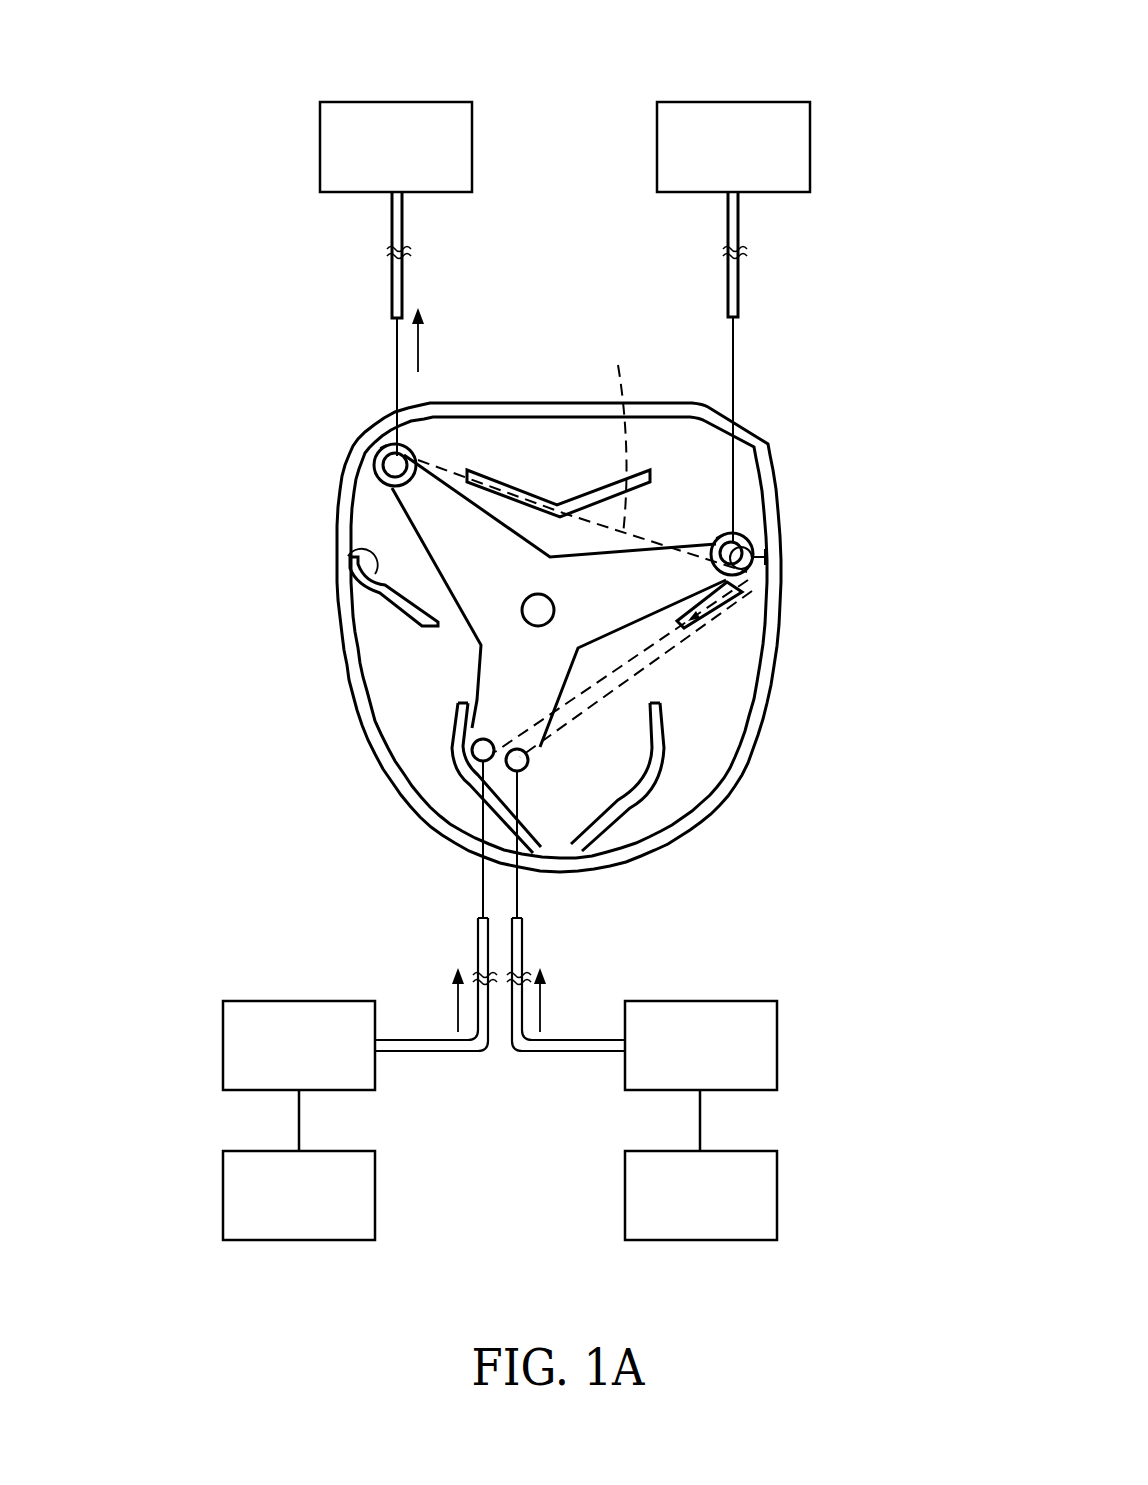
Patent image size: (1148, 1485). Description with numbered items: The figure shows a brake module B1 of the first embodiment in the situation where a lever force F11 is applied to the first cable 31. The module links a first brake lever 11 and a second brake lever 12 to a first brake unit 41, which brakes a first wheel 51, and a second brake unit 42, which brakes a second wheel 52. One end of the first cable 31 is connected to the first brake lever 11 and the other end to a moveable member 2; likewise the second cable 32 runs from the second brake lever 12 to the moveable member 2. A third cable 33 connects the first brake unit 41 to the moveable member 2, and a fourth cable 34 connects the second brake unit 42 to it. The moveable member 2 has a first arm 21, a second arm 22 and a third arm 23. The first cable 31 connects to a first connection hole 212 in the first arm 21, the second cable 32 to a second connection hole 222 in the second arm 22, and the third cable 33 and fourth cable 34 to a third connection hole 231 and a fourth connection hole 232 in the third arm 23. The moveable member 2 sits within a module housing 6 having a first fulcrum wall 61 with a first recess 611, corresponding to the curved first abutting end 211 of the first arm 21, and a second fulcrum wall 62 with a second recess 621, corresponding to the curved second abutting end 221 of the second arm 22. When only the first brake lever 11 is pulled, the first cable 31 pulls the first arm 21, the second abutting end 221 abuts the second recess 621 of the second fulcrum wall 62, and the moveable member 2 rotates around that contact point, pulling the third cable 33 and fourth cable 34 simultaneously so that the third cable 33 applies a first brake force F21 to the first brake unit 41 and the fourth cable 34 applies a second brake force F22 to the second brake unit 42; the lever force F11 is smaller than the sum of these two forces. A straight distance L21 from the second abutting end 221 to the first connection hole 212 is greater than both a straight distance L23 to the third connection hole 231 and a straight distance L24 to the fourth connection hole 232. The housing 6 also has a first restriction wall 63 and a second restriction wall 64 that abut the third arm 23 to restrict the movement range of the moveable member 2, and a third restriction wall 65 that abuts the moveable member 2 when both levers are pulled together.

The brake module B1 is at (180, 40).
The first brake lever 11 is at (398, 100).
The second brake lever 12 is at (735, 100).
The moveable member 2 is at (561, 559).
The first arm 21 is at (488, 538).
The first abutting end 211 is at (372, 478).
The first connection hole 212 is at (373, 458).
The second arm 22 is at (701, 550).
The second abutting end 221 is at (750, 556).
The second connection hole 222 is at (713, 548).
The third arm 23 is at (551, 719).
The third connection hole 231 is at (467, 750).
The fourth connection hole 232 is at (530, 755).
The first cable 31 is at (378, 281).
The second cable 32 is at (752, 280).
The third cable 33 is at (462, 942).
The fourth cable 34 is at (538, 940).
The first brake unit 41 is at (223, 1045).
The second brake unit 42 is at (777, 1045).
The first wheel 51 is at (223, 1197).
The second wheel 52 is at (777, 1197).
The module housing 6 is at (772, 430).
The first fulcrum wall 61 is at (347, 580).
The first recess 611 is at (350, 548).
The second fulcrum wall 62 is at (770, 588).
The second recess 621 is at (742, 597).
The first restriction wall 63 is at (465, 795).
The second restriction wall 64 is at (647, 793).
The third restriction wall 65 is at (543, 497).
The lever force F11 is at (442, 340).
The first brake force F21 is at (433, 1000).
The second brake force F22 is at (565, 1000).
The straight distance L21 is at (582, 451).
The straight distance L23 is at (650, 680).
The straight distance L24 is at (655, 708).